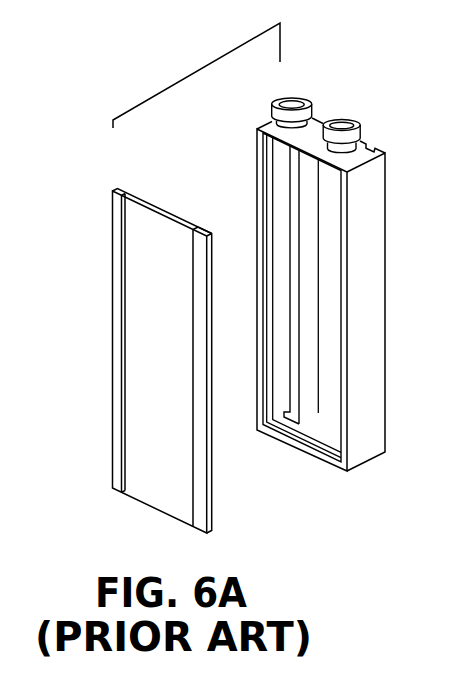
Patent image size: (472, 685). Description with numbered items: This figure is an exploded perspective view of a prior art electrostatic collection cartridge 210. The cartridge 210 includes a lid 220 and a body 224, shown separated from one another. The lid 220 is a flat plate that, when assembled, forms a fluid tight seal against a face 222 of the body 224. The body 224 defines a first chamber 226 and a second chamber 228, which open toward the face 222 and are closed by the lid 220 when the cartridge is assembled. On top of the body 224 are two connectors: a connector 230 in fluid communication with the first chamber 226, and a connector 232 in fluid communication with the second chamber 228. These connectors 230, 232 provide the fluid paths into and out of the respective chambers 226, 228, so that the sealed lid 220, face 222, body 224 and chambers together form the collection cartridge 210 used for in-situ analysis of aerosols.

The electrostatic collection cartridge 210 is at (197, 71).
The lid 220 is at (212, 497).
The face 222 is at (262, 147).
The body 224 is at (323, 265).
The first chamber 226 is at (280, 163).
The second chamber 228 is at (327, 212).
The connector 230 is at (313, 112).
The connector 232 is at (362, 138).